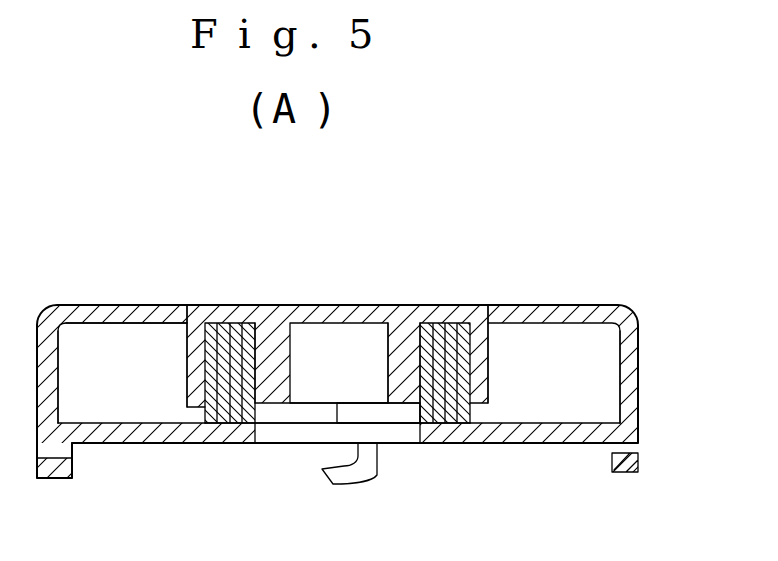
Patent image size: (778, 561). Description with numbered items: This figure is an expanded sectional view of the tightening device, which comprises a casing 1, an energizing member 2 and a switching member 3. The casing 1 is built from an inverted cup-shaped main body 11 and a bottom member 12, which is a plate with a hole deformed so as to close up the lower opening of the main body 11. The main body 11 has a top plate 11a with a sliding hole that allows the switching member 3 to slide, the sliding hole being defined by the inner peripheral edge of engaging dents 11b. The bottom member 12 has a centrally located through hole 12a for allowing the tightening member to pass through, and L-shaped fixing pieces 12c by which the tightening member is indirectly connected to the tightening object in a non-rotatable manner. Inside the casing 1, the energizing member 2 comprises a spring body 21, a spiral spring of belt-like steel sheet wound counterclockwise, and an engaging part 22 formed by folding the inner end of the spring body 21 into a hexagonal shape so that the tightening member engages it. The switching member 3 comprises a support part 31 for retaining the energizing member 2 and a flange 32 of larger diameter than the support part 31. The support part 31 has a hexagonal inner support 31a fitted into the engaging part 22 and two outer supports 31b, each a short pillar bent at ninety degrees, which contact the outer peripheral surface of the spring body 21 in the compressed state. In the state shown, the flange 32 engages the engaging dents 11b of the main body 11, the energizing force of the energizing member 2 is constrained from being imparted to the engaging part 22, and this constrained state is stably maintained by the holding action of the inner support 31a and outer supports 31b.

The casing 1 is at (612, 287).
The energizing member 2 is at (202, 403).
The switching member 3 is at (357, 298).
The main body 11 is at (537, 304).
The top plate 11a is at (102, 313).
The engaging dents 11b is at (200, 314).
The bottom member 12 is at (503, 441).
The through hole 12a is at (254, 437).
The L-shaped fixing pieces 12c is at (55, 479).
The spring body 21 is at (223, 425).
The engaging part 22 is at (400, 398).
The support part 31 is at (322, 385).
The inner support 31a is at (403, 402).
The outer supports 31b is at (187, 363).
The flange 32 is at (300, 305).